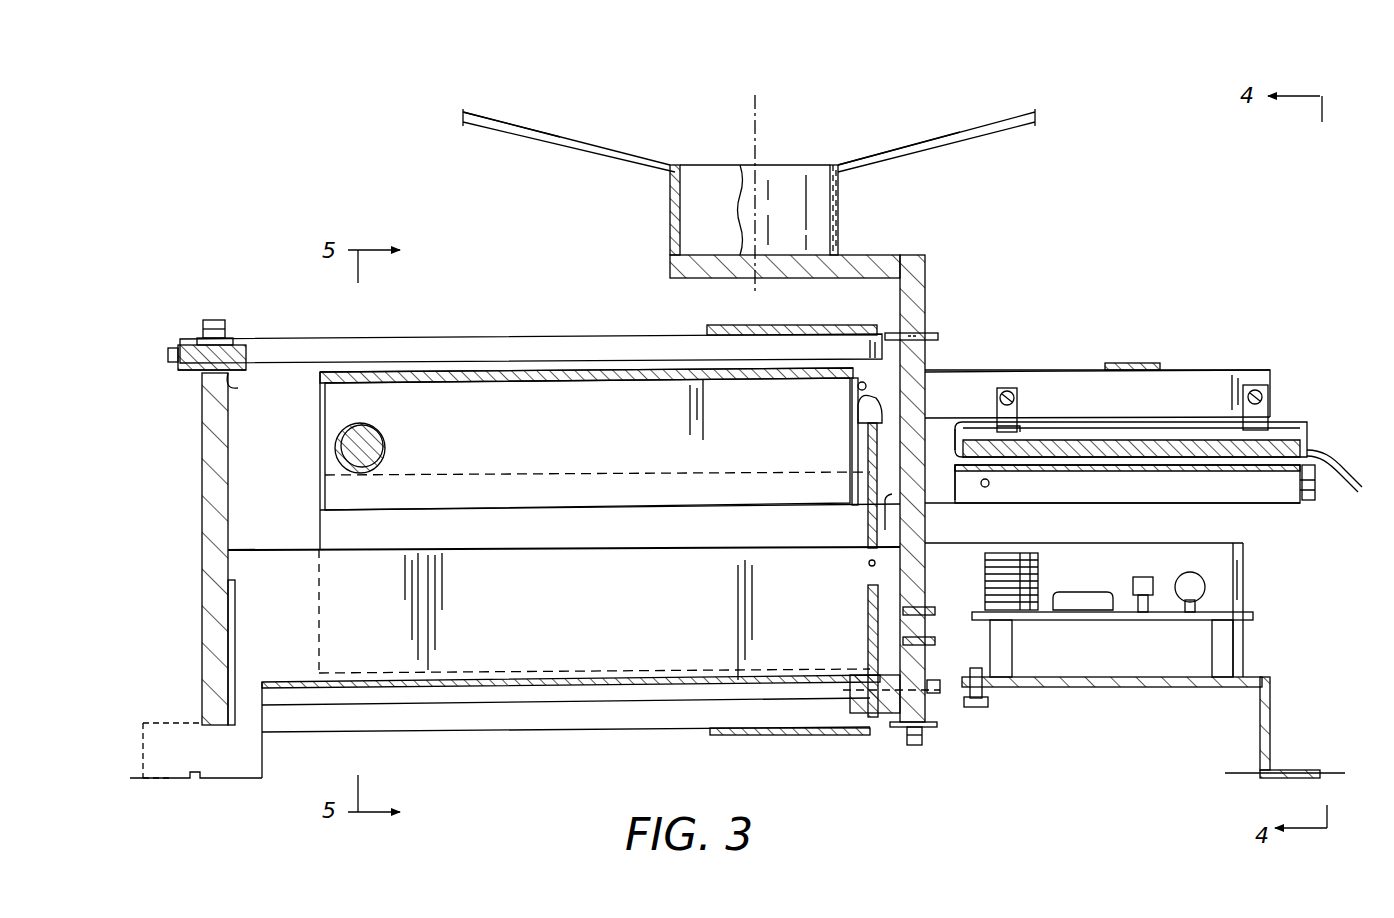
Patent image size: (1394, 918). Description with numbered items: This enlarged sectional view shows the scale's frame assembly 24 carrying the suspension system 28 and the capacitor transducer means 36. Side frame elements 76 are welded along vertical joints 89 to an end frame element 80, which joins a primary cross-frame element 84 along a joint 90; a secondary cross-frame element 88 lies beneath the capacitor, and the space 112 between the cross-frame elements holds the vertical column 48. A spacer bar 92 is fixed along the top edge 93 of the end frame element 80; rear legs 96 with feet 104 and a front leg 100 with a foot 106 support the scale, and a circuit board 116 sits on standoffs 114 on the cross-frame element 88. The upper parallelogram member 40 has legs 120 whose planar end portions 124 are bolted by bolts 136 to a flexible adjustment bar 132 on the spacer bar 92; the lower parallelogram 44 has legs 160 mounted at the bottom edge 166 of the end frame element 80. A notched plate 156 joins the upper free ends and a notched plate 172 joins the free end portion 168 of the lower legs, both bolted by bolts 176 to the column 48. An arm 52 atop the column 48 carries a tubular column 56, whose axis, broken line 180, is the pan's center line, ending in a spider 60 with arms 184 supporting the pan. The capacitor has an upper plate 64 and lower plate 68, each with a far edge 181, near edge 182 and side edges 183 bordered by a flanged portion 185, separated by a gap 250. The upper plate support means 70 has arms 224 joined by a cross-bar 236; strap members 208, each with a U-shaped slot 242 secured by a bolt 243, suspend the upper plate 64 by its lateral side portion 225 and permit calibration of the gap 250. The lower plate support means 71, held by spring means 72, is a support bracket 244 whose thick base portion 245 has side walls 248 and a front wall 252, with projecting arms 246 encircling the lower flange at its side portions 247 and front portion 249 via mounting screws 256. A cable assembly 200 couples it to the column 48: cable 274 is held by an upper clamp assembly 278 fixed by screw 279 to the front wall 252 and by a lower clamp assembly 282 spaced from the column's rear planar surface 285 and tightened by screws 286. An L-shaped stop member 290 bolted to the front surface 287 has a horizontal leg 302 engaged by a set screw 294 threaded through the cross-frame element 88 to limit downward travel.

The frame assembly 24 is at (262, 598).
The suspension system 28 is at (928, 358).
The transducer means 36 is at (1335, 458).
The upper parallelogram member 40 is at (620, 352).
The lower parallelogram member 44 is at (605, 708).
The interconnecting vertical column 48 is at (920, 283).
The arm 52 is at (842, 257).
The tubular column 56 is at (803, 168).
The spider 60 is at (567, 132).
The upper plate 64 is at (1160, 440).
The lower plate 68 is at (1155, 475).
The upper plate support means 70 is at (1097, 398).
The lower plate support means 71 is at (1112, 487).
The spring means 72 is at (380, 433).
The side frame elements 76 is at (302, 705).
The end frame element 80 is at (208, 468).
The primary cross-frame element 84 is at (648, 678).
The secondary cross-frame element 88 is at (1145, 690).
The vertically disposed joints 89 is at (232, 568).
The joint 90 is at (232, 683).
The spacer bar 92 is at (178, 370).
The top edge 93 is at (234, 392).
The rear legs 96 is at (258, 757).
The front leg 100 is at (1272, 712).
The foot 104 is at (140, 778).
The foot 106 is at (1272, 778).
The space 112 is at (930, 668).
The standoffs 114 is at (1012, 668).
The circuit board 116 is at (1160, 622).
The elongated legs 120 is at (516, 340).
The opposed end portions 124 is at (238, 346).
The flexible adjustment bar 132 is at (178, 345).
The bolts 136 is at (222, 320).
The notched plate 156 is at (780, 327).
The legs 160 is at (518, 708).
The bottom horizontal edge 166 is at (205, 733).
The free end portion 168 is at (778, 710).
The notched plate 172 is at (738, 735).
The bolts 176 is at (914, 745).
The broken line 180 is at (760, 108).
The far edge 181 is at (1374, 485).
The near edge 182 is at (968, 425).
The side edges 183 is at (1130, 455).
The arms 184 is at (540, 106).
The flanged portion 185 is at (1270, 438).
The cable assembly 200 is at (866, 608).
The strap members 208 is at (1030, 428).
The arms 224 is at (1195, 372).
The lateral side portion 225 is at (1152, 438).
The cross-bar 236 is at (1124, 362).
The U-shaped slot 242 is at (1007, 393).
The bolt 243 is at (1022, 428).
The support bracket 244 is at (548, 480).
The base portion 245 is at (722, 462).
The projecting arms 246 is at (888, 500).
The side portions 247 is at (1122, 497).
The side walls 248 is at (378, 502).
The front portion 249 is at (1305, 490).
The gap 250 is at (1108, 467).
The front wall 252 is at (852, 445).
The mounting screws 256 is at (990, 487).
The cable 274 is at (862, 473).
The upper clamp assembly 278 is at (860, 407).
The screw 279 is at (855, 387).
The lower clamp assembly 282 is at (892, 698).
The rear planar surface 285 is at (880, 565).
The screws 286 is at (940, 692).
The front surface 287 is at (985, 556).
The stop member 290 is at (945, 625).
The set screw 294 is at (985, 700).
The horizontal leg 302 is at (975, 648).